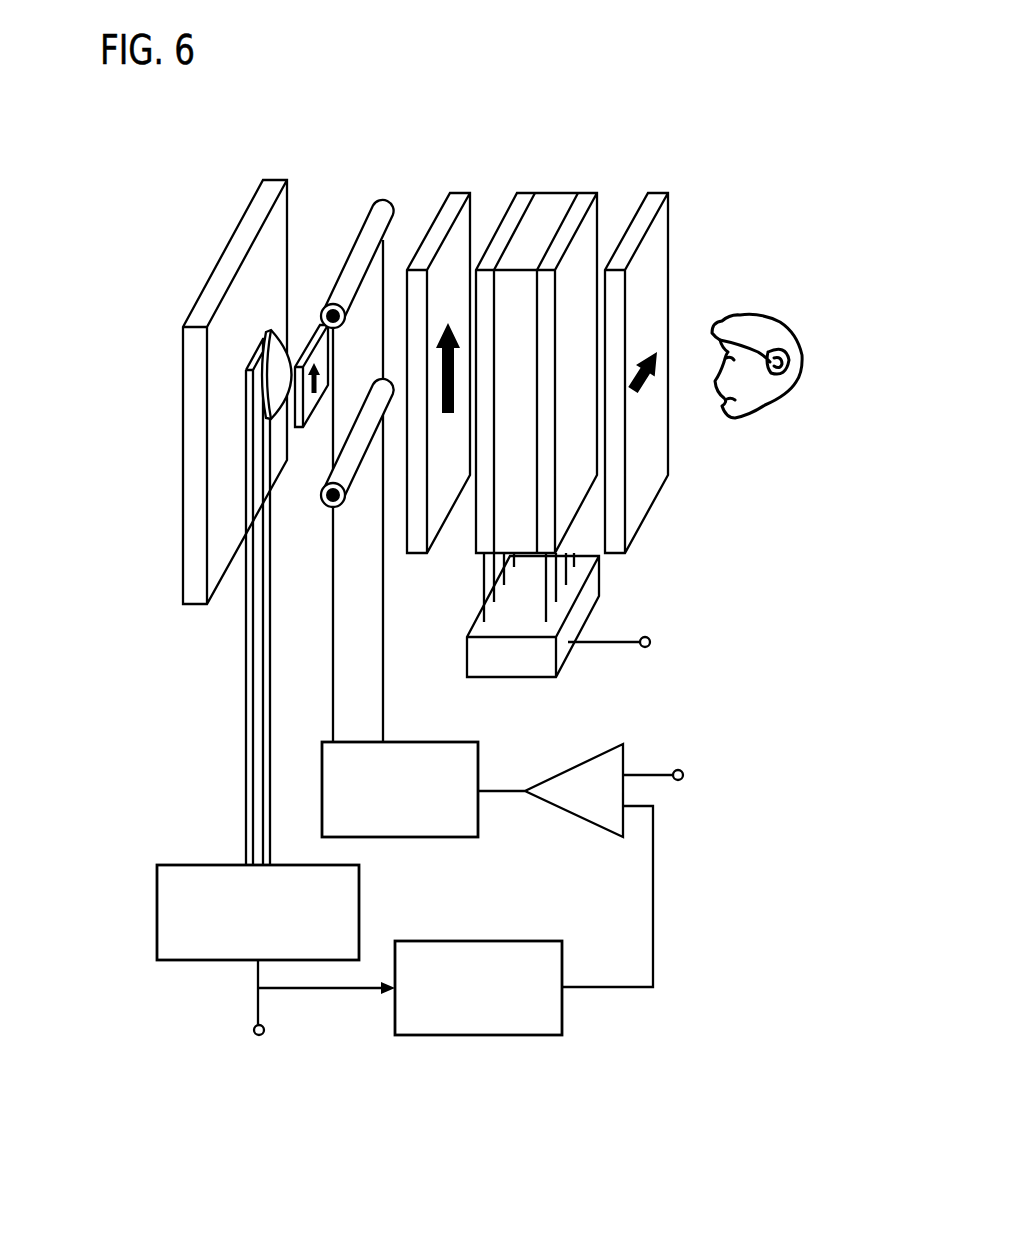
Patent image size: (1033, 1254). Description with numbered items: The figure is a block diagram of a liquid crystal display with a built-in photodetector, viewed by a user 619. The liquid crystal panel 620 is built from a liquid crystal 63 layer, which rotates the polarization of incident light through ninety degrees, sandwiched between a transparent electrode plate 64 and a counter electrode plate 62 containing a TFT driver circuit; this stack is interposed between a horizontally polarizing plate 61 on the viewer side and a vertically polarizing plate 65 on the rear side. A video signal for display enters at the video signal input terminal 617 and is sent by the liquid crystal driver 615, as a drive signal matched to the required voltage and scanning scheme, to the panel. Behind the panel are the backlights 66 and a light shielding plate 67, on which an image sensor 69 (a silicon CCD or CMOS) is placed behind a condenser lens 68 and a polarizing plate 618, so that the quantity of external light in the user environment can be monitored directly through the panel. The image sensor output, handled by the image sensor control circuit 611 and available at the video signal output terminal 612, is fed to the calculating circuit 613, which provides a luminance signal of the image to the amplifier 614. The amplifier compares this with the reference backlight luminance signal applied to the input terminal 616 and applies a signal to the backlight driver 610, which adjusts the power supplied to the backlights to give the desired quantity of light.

The polarizing plate 61 is at (653, 195).
The counter electrode plate 62 is at (588, 195).
The liquid crystal 63 is at (555, 195).
The transparent electrode plate 64 is at (525, 195).
The polarizing plate 65 is at (445, 195).
The backlights 66 is at (380, 206).
The light shielding plate 67 is at (246, 210).
The condenser lens 68 is at (265, 340).
The image sensor 69 is at (252, 397).
The backlight driver 610 is at (427, 838).
The image sensor control circuit 611 is at (157, 913).
The video signal output terminal 612 is at (254, 1027).
The calculating circuit 613 is at (490, 1036).
The amplifier 614 is at (583, 818).
The liquid crystal driver 615 is at (567, 660).
The reference backlight luminance signal input terminal 616 is at (680, 768).
The video signal input terminal 617 is at (646, 637).
The polarizing plate 618 is at (300, 402).
The user 619 is at (757, 412).
The liquid crystal panel 620 is at (785, 92).